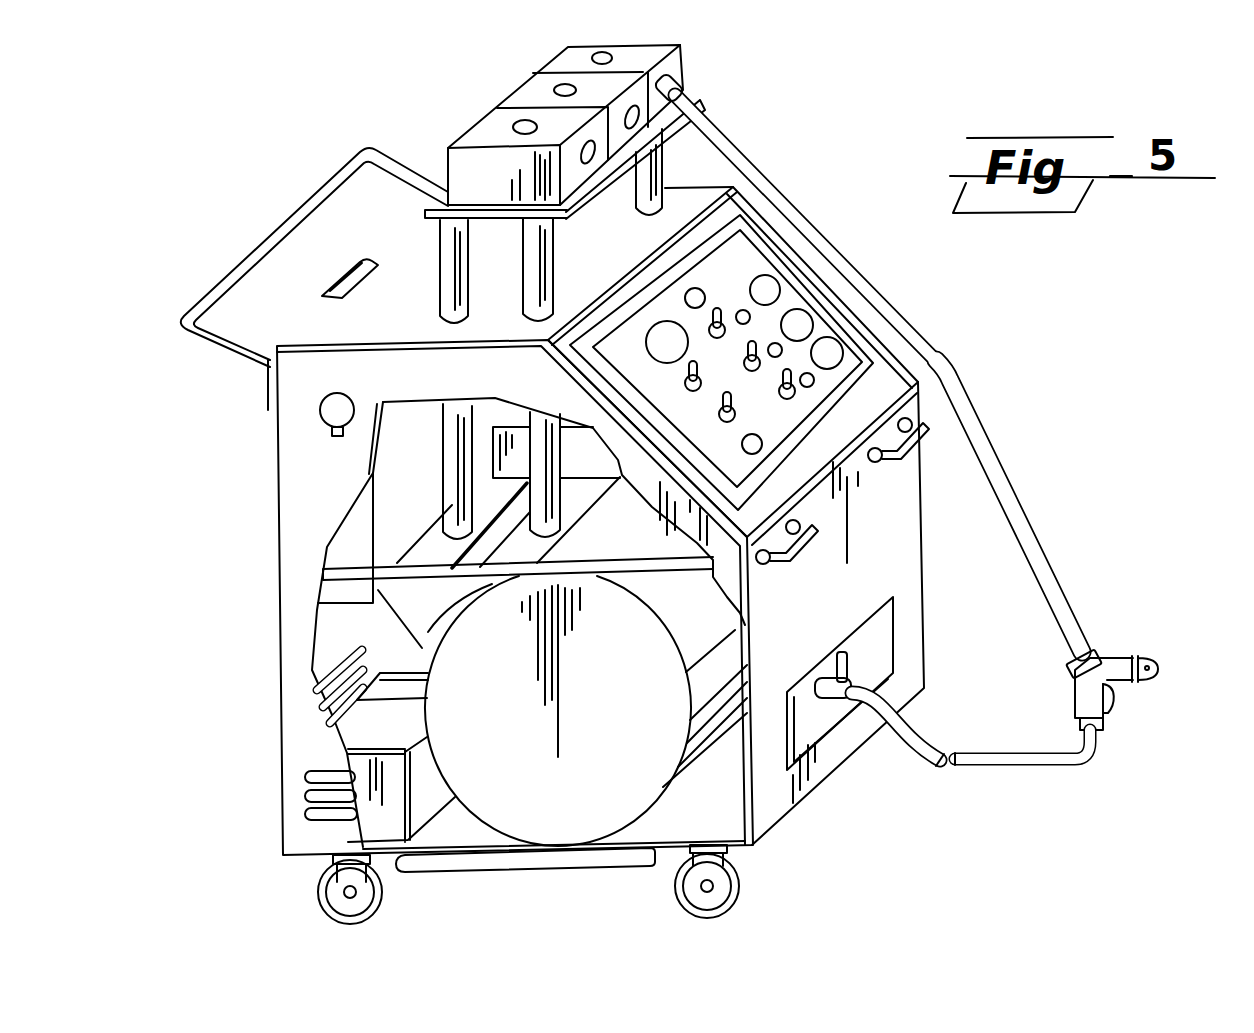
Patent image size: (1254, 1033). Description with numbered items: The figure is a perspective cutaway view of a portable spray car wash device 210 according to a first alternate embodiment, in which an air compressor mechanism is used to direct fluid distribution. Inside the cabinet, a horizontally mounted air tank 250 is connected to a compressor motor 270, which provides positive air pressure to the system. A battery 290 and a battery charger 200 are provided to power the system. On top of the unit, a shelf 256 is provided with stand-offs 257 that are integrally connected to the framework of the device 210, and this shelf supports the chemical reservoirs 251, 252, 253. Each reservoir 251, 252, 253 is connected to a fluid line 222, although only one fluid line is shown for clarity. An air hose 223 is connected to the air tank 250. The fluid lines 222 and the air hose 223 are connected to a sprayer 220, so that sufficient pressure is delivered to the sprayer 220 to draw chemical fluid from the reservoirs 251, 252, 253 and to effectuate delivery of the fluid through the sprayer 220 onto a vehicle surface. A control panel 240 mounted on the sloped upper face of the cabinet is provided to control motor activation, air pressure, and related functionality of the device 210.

The battery charger 200 is at (423, 650).
The device 210 is at (866, 124).
The sprayer 220 is at (1108, 722).
The fluid line 222 is at (1017, 493).
The air hose 223 is at (1007, 770).
The control panel 240 is at (748, 285).
The air tank 250 is at (645, 720).
The chemical reservoir 251 is at (463, 147).
The chemical reservoir 252 is at (530, 93).
The chemical reservoir 253 is at (677, 63).
The shelf 256 is at (683, 147).
The stand-offs 257 is at (447, 267).
The compressor motor 270 is at (500, 447).
The battery 290 is at (357, 827).